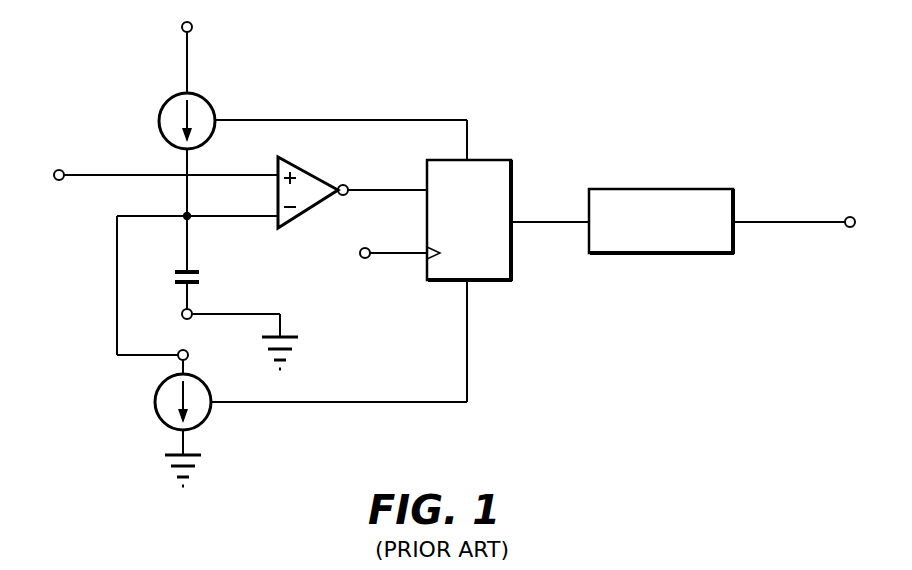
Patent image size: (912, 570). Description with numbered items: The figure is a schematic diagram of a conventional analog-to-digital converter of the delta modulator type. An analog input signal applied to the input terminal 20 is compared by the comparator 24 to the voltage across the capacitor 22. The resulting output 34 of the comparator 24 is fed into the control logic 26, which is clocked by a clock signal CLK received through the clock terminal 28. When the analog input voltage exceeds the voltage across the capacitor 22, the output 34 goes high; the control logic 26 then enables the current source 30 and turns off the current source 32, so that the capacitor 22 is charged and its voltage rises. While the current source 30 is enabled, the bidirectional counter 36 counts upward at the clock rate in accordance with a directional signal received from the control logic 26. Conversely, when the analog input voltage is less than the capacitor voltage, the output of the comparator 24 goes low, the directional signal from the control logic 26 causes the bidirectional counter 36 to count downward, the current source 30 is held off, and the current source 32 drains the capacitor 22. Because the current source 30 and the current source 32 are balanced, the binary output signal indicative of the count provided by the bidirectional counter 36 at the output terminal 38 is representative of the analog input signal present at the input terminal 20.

The input terminal 20 is at (63, 168).
The capacitor 22 is at (196, 268).
The comparator 24 is at (316, 143).
The control logic 26 is at (512, 166).
The clock terminal 28 is at (366, 259).
The current source 30 is at (213, 105).
The current source 32 is at (209, 420).
The output 34 is at (346, 183).
The bidirectional counter 36 is at (684, 189).
The output terminal 38 is at (866, 187).